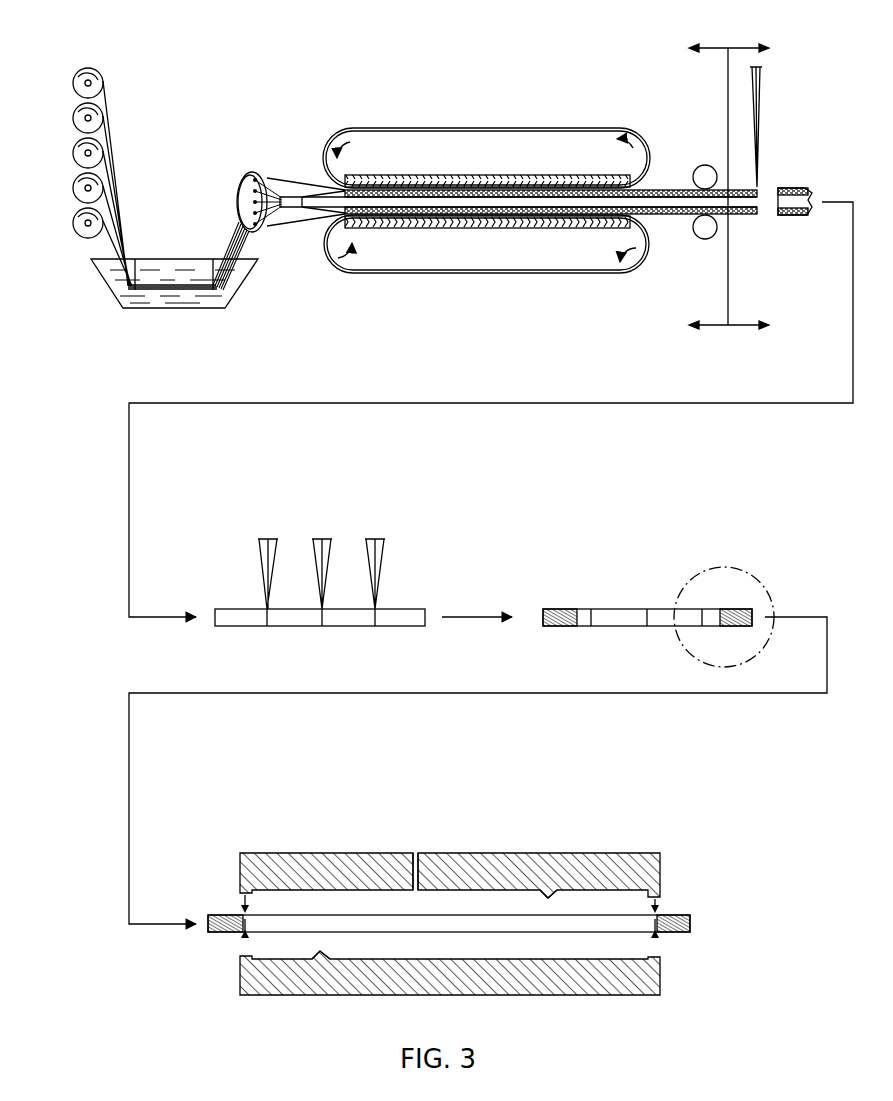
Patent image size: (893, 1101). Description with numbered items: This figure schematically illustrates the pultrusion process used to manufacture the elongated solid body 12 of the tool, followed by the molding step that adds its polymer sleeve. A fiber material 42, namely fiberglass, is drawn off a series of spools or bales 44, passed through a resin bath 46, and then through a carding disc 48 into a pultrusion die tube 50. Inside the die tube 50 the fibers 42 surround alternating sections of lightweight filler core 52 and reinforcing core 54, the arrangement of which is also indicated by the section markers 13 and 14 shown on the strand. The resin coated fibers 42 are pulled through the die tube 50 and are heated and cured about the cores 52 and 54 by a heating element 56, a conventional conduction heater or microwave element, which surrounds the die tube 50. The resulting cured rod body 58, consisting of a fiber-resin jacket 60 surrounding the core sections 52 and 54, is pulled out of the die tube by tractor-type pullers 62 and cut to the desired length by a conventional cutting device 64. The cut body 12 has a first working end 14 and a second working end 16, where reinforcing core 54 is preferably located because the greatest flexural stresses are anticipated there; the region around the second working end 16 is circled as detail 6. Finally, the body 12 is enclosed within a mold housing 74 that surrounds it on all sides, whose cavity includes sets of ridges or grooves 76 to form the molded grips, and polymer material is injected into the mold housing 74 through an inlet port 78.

The detail view circle 6 is at (724, 616).
The elongated solid body 12 is at (788, 215).
The section line 13 is at (729, 188).
The first working end 14 is at (560, 608).
The second working end 16 is at (732, 608).
The fiber material 42 is at (113, 135).
The spools or bales 44 is at (78, 110).
The resin bath 46 is at (112, 288).
The carding disc 48 is at (257, 168).
The pultrusion die tube 50 is at (430, 106).
The lightweight filler core 52 is at (307, 208).
The reinforcing core 54 is at (298, 192).
The heating element 56 is at (548, 175).
The cured rod body 58 is at (668, 165).
The fiber-resin jacket 60 is at (667, 217).
The tractor-type pullers 62 is at (710, 165).
The cutting device 64 is at (758, 117).
The mold housing 74 is at (600, 853).
The ridges or grooves 76 is at (548, 897).
The inlet port 78 is at (413, 862).